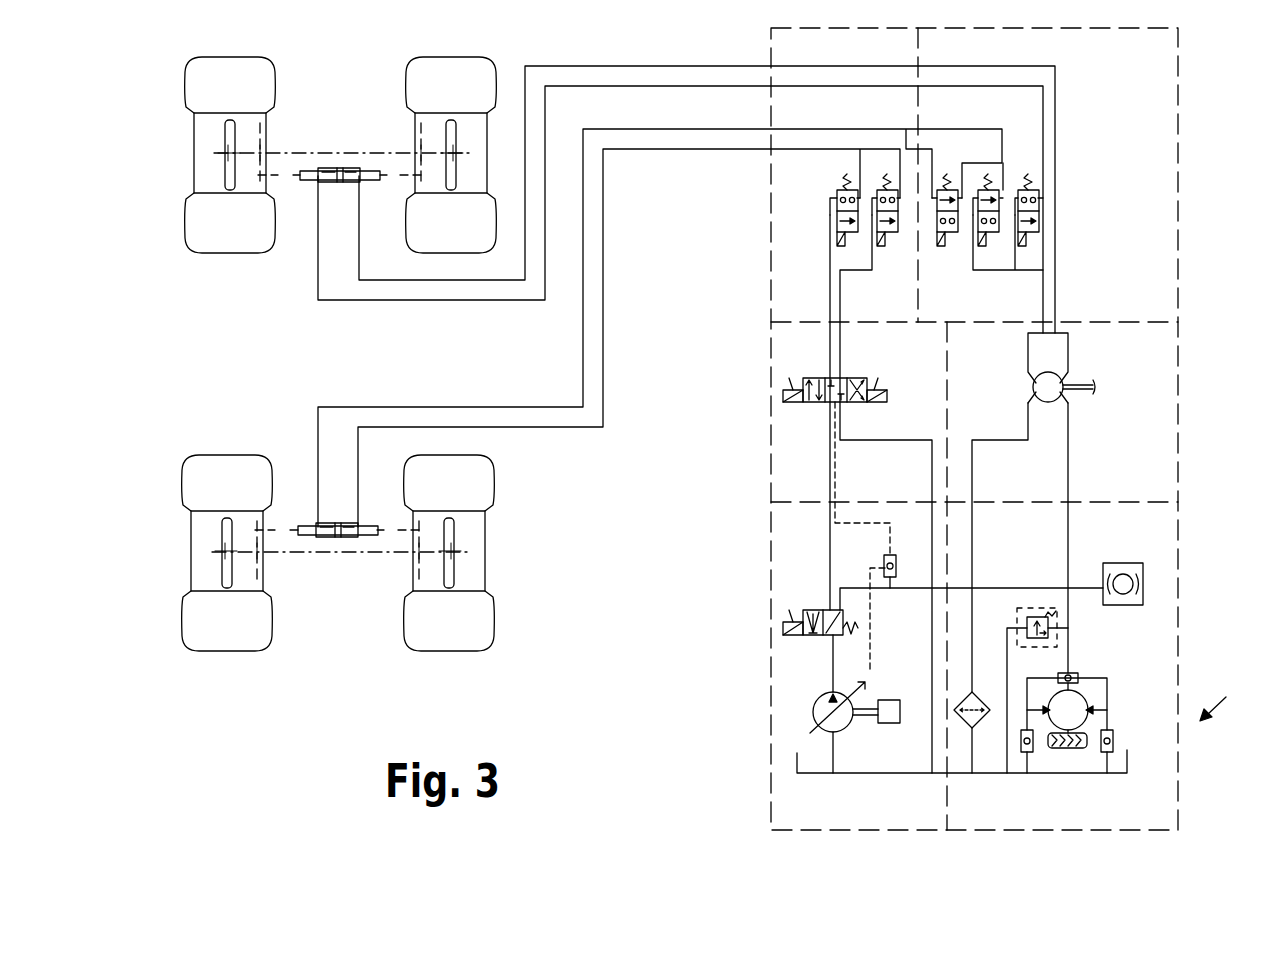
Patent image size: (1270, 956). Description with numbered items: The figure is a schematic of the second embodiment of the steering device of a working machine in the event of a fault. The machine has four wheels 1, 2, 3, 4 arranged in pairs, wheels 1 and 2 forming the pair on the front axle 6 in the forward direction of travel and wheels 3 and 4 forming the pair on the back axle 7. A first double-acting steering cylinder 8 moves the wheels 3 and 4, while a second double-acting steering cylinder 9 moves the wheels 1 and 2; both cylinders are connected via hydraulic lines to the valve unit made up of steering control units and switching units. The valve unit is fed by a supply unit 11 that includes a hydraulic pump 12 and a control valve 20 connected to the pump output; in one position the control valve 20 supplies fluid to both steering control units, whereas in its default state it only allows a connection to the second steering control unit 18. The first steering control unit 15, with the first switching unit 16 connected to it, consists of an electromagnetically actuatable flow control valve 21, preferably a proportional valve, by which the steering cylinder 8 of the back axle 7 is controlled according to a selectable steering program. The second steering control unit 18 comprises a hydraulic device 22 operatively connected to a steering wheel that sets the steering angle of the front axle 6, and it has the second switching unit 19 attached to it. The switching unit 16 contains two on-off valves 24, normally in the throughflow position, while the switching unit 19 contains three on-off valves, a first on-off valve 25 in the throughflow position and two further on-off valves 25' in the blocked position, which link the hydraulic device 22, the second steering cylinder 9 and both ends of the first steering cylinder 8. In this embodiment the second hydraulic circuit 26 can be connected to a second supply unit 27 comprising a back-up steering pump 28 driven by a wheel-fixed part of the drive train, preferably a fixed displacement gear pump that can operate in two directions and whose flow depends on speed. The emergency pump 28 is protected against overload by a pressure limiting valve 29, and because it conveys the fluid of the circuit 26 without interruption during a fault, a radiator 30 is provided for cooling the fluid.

The wheel 1 is at (184, 163).
The wheel 2 is at (407, 140).
The wheel 3 is at (183, 554).
The wheel 4 is at (405, 580).
The front axle 6 is at (300, 150).
The back axle 7 is at (299, 562).
The first double-acting steering cylinder 8 is at (345, 538).
The second double-acting steering cylinder 9 is at (352, 169).
The supply unit 11 is at (765, 773).
The hydraulic pump 12 is at (812, 712).
The first steering control unit 15 is at (783, 397).
The first switching unit 16 is at (768, 258).
The second steering control unit 18 is at (1183, 401).
The second switching unit 19 is at (1183, 196).
The control valve 20 is at (790, 612).
The flow control valve 21 is at (805, 403).
The hydraulic device 22 is at (1060, 378).
The on-off valves 24 is at (878, 189).
The first on-off valve 25 is at (1064, 210).
The on-off valves 25' is at (1026, 191).
The second hydraulic circuit 26 is at (1234, 692).
The second supply unit 27 is at (1183, 562).
The back-up steering pump 28 is at (1082, 693).
The pressure limiting valve 29 is at (1027, 613).
The radiator 30 is at (982, 735).